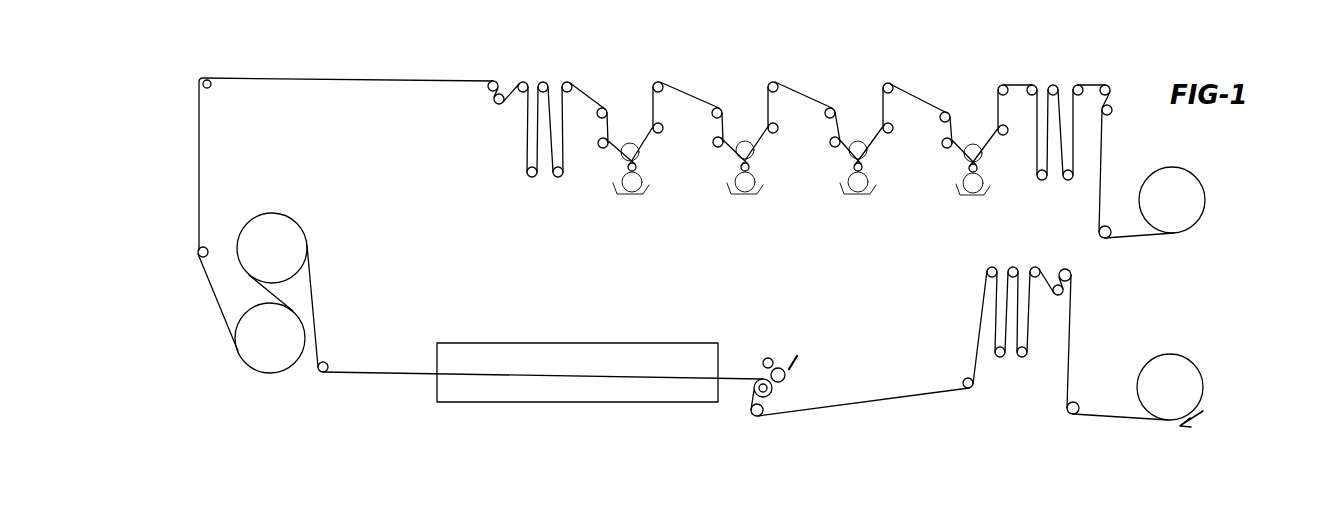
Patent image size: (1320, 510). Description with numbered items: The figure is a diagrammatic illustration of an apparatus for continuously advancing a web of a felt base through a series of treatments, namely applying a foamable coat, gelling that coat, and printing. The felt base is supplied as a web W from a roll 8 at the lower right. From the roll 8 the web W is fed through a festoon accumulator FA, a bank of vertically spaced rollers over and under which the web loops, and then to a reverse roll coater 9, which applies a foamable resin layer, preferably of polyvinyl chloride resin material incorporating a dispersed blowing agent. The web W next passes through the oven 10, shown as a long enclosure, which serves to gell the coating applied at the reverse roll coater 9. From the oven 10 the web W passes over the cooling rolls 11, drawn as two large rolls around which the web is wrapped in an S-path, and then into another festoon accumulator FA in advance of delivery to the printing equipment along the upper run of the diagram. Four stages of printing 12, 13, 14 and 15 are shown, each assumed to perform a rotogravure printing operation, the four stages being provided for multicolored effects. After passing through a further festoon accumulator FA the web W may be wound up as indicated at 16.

The roll 8 is at (1157, 362).
The reverse roll coater 9 is at (810, 345).
The oven 10 is at (590, 323).
The cooling rolls 11 is at (277, 222).
The first printing stage 12 is at (630, 133).
The second printing stage 13 is at (745, 133).
The third printing stage 14 is at (859, 134).
The fourth printing stage 15 is at (974, 137).
The wind-up 16 is at (1177, 171).
The web W is at (300, 88).
The festoon accumulator FA is at (588, 66).